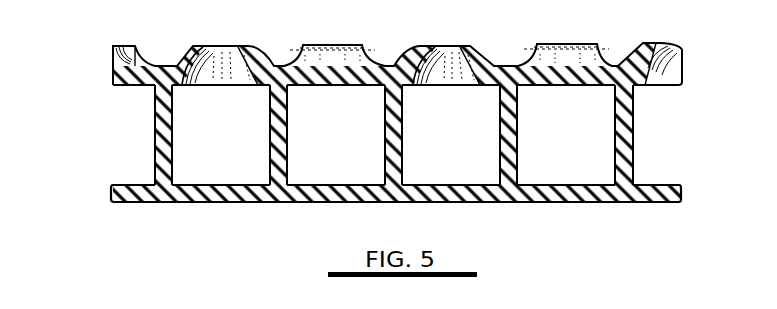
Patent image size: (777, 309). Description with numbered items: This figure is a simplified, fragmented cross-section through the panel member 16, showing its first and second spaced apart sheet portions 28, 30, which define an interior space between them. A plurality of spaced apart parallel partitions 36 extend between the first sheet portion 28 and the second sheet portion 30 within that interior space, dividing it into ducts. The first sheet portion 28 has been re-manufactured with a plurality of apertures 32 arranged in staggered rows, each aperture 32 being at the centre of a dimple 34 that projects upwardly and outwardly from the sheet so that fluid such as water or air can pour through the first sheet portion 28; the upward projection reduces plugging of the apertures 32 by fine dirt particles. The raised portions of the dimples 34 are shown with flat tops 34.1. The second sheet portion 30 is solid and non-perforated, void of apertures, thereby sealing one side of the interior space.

The panel member 16 is at (95, 103).
The first sheet portion 28 is at (623, 66).
The second sheet portion 30 is at (568, 202).
The aperture 32 is at (218, 53).
The dimple 34 is at (251, 51).
The flat top of dome 34.1 is at (332, 52).
The partition 36 is at (270, 118).